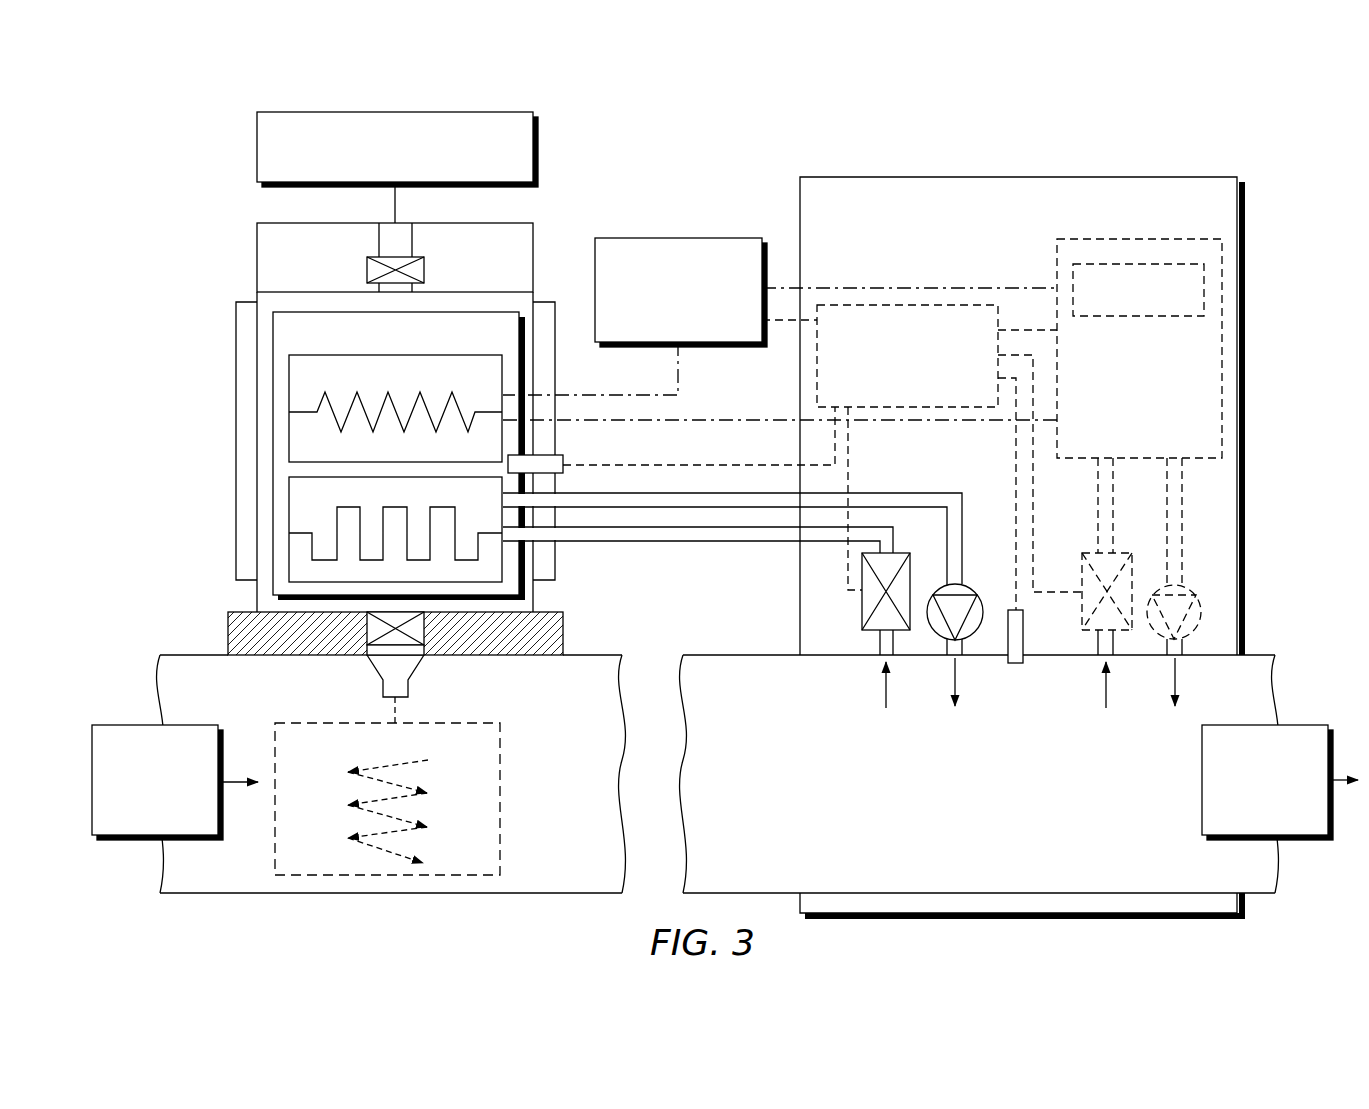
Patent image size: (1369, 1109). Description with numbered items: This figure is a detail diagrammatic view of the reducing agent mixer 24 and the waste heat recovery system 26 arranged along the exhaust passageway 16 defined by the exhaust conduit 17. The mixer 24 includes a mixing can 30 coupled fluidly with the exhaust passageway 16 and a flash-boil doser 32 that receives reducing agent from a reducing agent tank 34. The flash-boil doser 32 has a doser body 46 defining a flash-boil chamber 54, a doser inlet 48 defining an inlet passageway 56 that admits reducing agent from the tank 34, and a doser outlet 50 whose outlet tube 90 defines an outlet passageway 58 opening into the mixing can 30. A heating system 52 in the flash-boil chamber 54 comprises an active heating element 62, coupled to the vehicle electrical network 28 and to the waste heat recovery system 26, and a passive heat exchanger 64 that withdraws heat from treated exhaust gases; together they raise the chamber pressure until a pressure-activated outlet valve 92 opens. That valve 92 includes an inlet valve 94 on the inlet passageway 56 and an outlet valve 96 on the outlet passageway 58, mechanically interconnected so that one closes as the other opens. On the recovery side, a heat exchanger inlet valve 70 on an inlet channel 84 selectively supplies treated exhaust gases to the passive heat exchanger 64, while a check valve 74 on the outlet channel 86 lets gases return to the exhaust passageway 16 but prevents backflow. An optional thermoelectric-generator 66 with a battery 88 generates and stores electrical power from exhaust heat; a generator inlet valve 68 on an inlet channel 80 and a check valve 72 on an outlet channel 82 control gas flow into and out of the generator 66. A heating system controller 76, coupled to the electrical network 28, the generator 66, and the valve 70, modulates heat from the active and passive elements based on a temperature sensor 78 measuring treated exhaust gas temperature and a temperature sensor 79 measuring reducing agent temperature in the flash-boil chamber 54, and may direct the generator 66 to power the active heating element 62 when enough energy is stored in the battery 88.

The exhaust passageway 16 is at (188, 700).
The exhaust conduit 17 is at (733, 655).
The reducing agent mixer 24 is at (460, 458).
The waste heat recovery system 26 is at (1018, 177).
The electrical network 28 is at (677, 238).
The mixing can 30 is at (500, 800).
The flash-boil doser 32 is at (469, 397).
The reducing agent tank 34 is at (397, 112).
The doser body 46 is at (222, 327).
The doser inlet 48 is at (300, 254).
The doser outlet 50 is at (246, 632).
The heating system 52 is at (273, 337).
The flash-boil chamber 54 is at (263, 397).
The inlet passageway 56 is at (400, 236).
The outlet passageway 58 is at (390, 680).
The active heating element 62 is at (289, 427).
The passive heat exchanger 64 is at (289, 507).
The thermoelectric-generator 66 is at (1222, 348).
The generator inlet valve 68 is at (1090, 630).
The heat exchanger inlet valve 70 is at (862, 605).
The check valve 72 is at (1201, 610).
The check valve 74 is at (940, 640).
The heating system controller 76 is at (817, 362).
The temperature sensor 78 is at (1015, 663).
The temperature sensor 79 is at (556, 455).
The inlet channel 80 is at (1113, 488).
The outlet channel 82 is at (1182, 555).
The inlet channel 84 is at (648, 543).
The outlet channel 86 is at (925, 493).
The battery 88 is at (1204, 288).
The outlet tube 90 is at (420, 665).
The pressure-activated outlet valve 92 is at (505, 254).
The inlet valve 94 is at (424, 272).
The outlet valve 96 is at (424, 635).